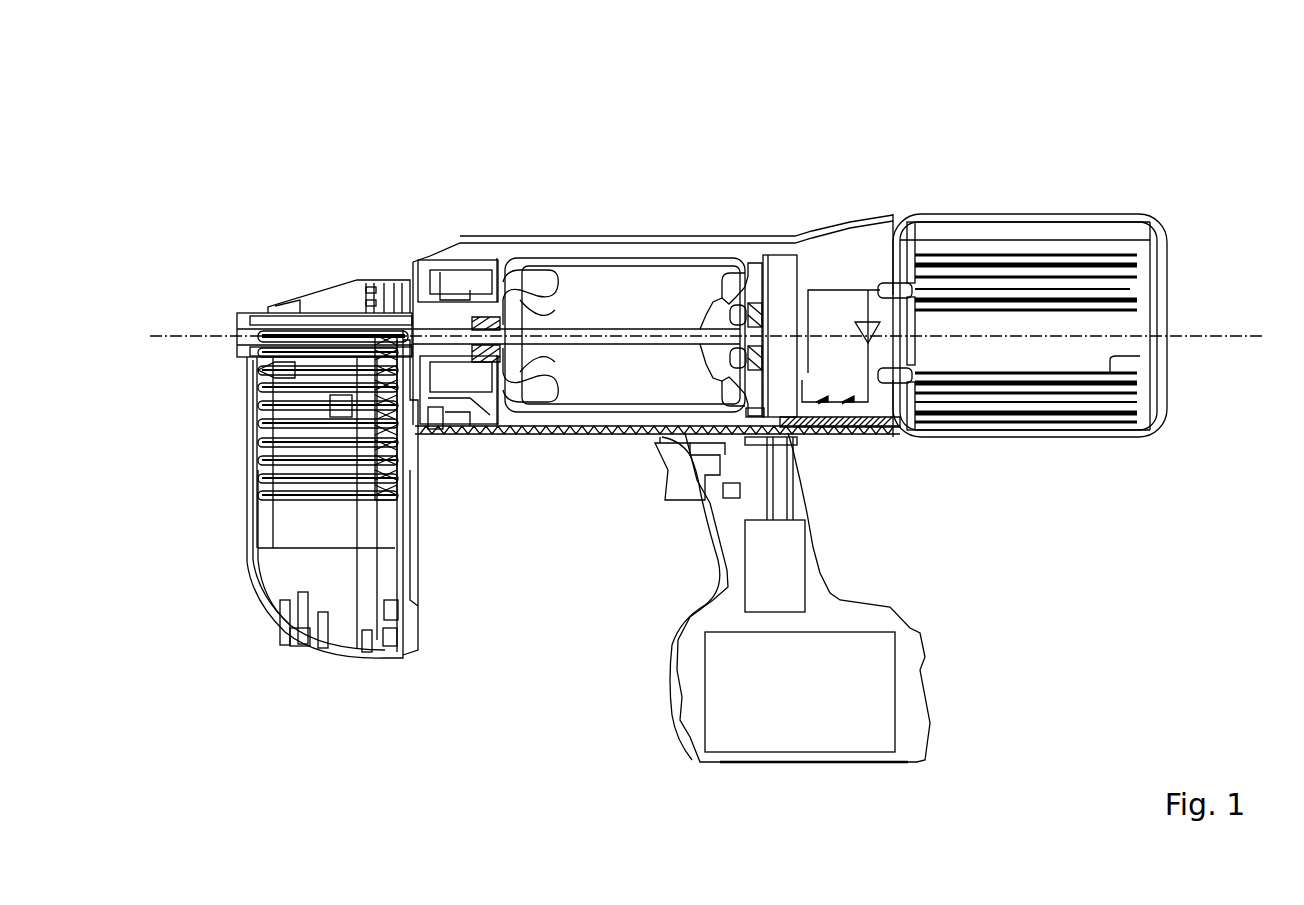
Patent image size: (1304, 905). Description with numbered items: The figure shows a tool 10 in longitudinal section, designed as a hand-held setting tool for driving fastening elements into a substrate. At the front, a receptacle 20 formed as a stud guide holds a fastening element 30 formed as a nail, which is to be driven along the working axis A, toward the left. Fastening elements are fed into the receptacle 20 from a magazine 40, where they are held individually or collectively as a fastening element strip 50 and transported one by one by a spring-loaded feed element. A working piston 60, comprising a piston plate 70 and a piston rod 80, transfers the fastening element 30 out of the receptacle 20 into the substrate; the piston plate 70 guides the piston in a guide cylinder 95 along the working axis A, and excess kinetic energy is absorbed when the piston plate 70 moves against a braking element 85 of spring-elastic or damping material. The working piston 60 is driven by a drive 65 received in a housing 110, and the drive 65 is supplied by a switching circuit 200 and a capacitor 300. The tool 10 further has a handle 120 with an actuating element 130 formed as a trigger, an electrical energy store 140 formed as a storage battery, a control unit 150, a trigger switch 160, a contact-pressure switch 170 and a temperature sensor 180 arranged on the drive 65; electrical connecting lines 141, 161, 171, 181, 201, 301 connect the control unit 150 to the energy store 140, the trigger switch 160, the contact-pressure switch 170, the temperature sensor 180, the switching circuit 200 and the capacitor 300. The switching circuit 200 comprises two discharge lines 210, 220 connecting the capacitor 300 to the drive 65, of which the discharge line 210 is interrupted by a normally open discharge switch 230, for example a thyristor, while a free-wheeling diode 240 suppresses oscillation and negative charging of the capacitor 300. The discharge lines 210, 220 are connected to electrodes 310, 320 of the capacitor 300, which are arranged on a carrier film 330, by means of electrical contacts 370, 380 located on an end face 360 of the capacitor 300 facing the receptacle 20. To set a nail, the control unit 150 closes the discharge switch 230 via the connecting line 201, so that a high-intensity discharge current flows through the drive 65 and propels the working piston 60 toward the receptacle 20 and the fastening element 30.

The tool 10 is at (255, 109).
The receptacle 20 is at (258, 318).
The fastening element 30 is at (318, 318).
The magazine 40 is at (318, 525).
The fastening element strip 50 is at (387, 512).
The working piston 60 is at (659, 136).
The drive 65 is at (783, 315).
The piston plate 70 is at (715, 320).
The piston rod 80 is at (620, 340).
The braking element 85 is at (520, 298).
The guide cylinder 95 is at (572, 260).
The housing 110 is at (1137, 230).
The handle 120 is at (732, 552).
The actuating element 130 is at (672, 455).
The electrical energy store 140 is at (735, 708).
The electrical connecting line 141 is at (773, 610).
The control unit 150 is at (767, 562).
The trigger switch 160 is at (723, 492).
The electrical connecting line 161 is at (750, 508).
The contact-pressure switch 170 is at (435, 424).
The electrical connecting line 171 is at (470, 428).
The temperature sensor 180 is at (803, 434).
The electrical connecting line 181 is at (775, 468).
The switching circuit 200 is at (851, 264).
The electrical connecting line 201 is at (830, 400).
The discharge line 210 is at (935, 398).
The discharge line 220 is at (878, 306).
The discharge switch 230 is at (850, 395).
The free-wheeling diode 240 is at (828, 292).
The capacitor 300 is at (1072, 237).
The electrical connecting line 301 is at (935, 420).
The electrode 310 is at (1155, 218).
The electrode 320 is at (872, 330).
The carrier film 330 is at (1163, 262).
The end face 360 is at (895, 292).
The electrical contact 370 is at (940, 265).
The electrical contact 380 is at (925, 388).
The working axis A is at (1205, 330).